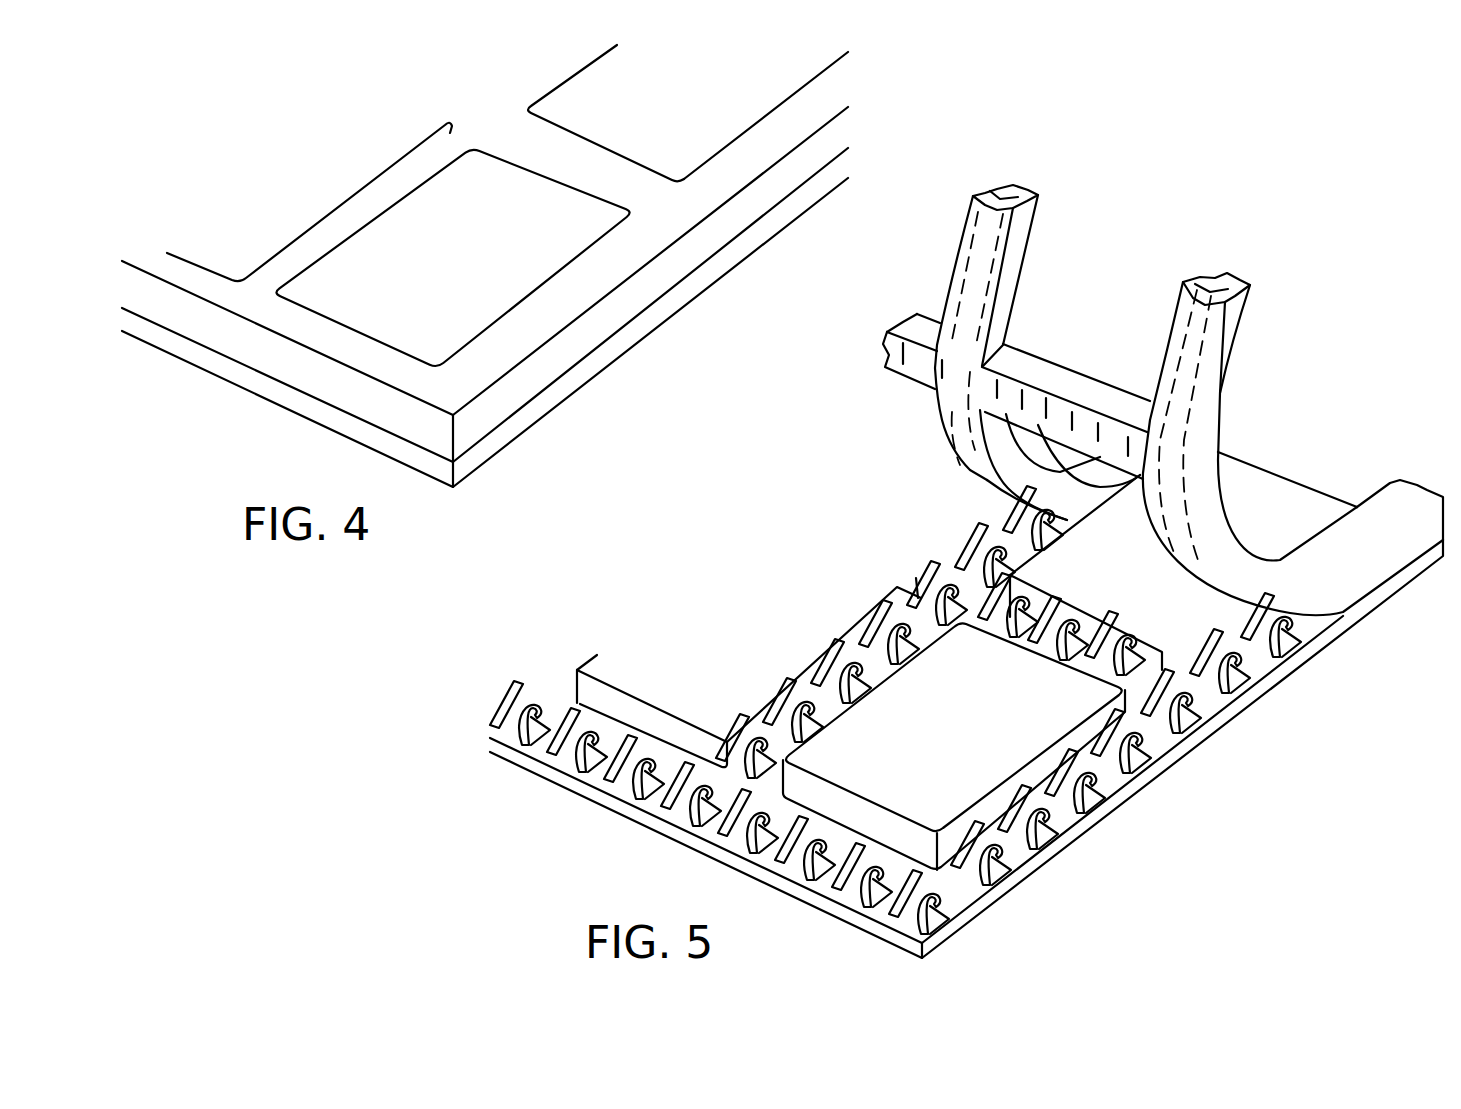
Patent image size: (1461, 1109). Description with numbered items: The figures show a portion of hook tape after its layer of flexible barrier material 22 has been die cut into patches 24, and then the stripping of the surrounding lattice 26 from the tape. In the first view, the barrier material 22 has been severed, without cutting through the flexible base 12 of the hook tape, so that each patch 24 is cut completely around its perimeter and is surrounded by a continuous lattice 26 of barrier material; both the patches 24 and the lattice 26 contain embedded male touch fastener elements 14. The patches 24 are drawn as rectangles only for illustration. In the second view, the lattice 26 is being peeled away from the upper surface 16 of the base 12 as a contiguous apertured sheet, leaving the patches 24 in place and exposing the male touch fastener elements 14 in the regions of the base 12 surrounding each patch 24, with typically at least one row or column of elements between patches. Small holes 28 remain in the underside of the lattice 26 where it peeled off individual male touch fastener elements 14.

In FIG. 4, the base 12 is at (687, 303).
In FIG. 5, the base 12 is at (1055, 853).
In FIG. 5, the male touch fastener elements 14 is at (640, 792).
In FIG. 5, the upper surface 16 is at (1155, 742).
In FIG. 4, the flexible barrier material 22 is at (572, 367).
In FIG. 5, the flexible barrier material 22 is at (1042, 355).
In FIG. 4, the patches 24 is at (524, 108).
In FIG. 5, the patches 24 is at (723, 695).
In FIG. 4, the lattice 26 is at (835, 93).
In FIG. 5, the lattice 26 is at (1238, 340).
In FIG. 5, the holes 28 is at (942, 367).